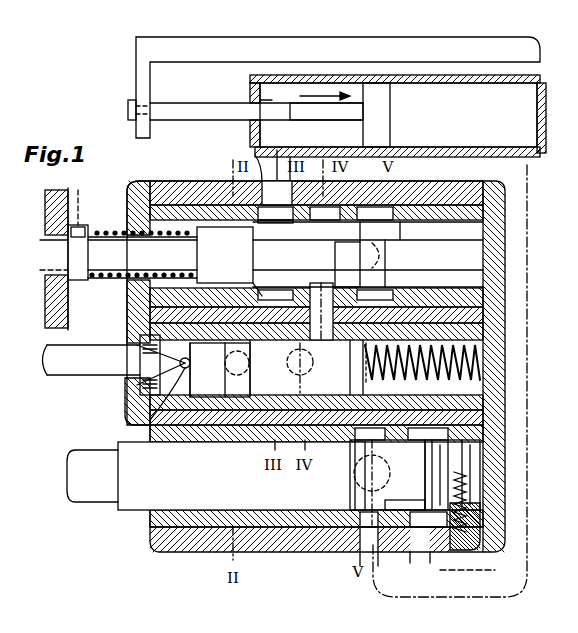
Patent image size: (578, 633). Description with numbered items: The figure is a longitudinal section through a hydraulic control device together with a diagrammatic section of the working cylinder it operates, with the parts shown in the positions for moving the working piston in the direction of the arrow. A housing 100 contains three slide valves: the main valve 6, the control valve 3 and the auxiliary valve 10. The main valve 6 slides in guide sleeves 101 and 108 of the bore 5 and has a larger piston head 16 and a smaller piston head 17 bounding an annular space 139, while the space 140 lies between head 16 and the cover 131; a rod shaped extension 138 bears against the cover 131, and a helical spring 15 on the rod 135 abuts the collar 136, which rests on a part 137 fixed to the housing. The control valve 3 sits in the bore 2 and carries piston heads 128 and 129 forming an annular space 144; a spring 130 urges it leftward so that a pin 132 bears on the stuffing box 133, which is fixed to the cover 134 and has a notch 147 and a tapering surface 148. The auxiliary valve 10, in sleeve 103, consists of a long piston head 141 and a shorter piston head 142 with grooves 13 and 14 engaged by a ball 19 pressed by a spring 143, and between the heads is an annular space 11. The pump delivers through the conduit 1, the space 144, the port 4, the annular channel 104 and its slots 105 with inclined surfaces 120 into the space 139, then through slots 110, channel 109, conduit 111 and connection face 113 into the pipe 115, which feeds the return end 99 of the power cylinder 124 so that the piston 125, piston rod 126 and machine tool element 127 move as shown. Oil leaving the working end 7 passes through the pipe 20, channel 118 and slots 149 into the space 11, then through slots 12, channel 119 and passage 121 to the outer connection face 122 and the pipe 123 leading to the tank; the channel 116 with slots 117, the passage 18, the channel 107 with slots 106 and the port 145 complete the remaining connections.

The conduit 1 is at (312, 378).
The bore 2 is at (478, 335).
The control valve 3 is at (112, 372).
The port 4 is at (321, 311).
The bore 5 is at (421, 254).
The main valve 6 is at (140, 238).
The working end 7 is at (528, 118).
The auxiliary valve 10 is at (92, 500).
The annular space 11 is at (378, 448).
The slots 12 is at (415, 505).
The annular groove 13 is at (452, 440).
The annular groove 14 is at (465, 448).
The helical spring 15 is at (96, 229).
The piston head 16 is at (348, 254).
The piston head 17 is at (142, 184).
The passage 18 is at (232, 280).
The ball 19 is at (466, 500).
The pipe 20 is at (527, 181).
The return end 99 is at (262, 100).
The housing 100 is at (470, 185).
The guide sleeve 101 is at (490, 205).
The guide sleeve 103 is at (470, 314).
The annular channel 104 is at (351, 178).
The slots 105 is at (320, 251).
The slots 106 is at (218, 415).
The annular channel 107 is at (248, 415).
The guide sleeve 108 is at (165, 300).
The annular channel 109 is at (246, 228).
The slots 110 is at (368, 254).
The conduit 111 is at (248, 192).
The connection face 113 is at (256, 169).
The pipe 115 is at (326, 124).
The annular channel 116 is at (405, 200).
The slots 117 is at (391, 245).
The annular channel 118 is at (358, 545).
The annular channel 119 is at (418, 560).
The inclined surfaces 120 is at (317, 262).
The passage 121 is at (432, 560).
The conduit 122 is at (425, 556).
The pipe 123 is at (462, 566).
The power cylinder 124 is at (520, 82).
The piston 125 is at (385, 100).
The piston rod 126 is at (185, 113).
The machine tool element 127 is at (530, 54).
The piston head 128 is at (252, 346).
The piston head 129 is at (312, 350).
The spring 130 is at (478, 392).
The cover 131 is at (478, 348).
The pin 132 is at (140, 348).
The stuffing box 133 is at (140, 412).
The cover 134 is at (135, 396).
The rod 135 is at (108, 278).
The collar 136 is at (65, 251).
The part 137 is at (64, 325).
The rod shaped extension 138 is at (478, 258).
The annular space 139 is at (319, 276).
The space 140 is at (451, 279).
The piston head 141 is at (140, 508).
The piston head 142 is at (474, 470).
The spring 143 is at (480, 535).
The annular space 144 is at (305, 367).
The port 145 is at (220, 370).
The notch 147 is at (150, 425).
The tapering surface 148 is at (190, 346).
The slots 149 is at (362, 493).